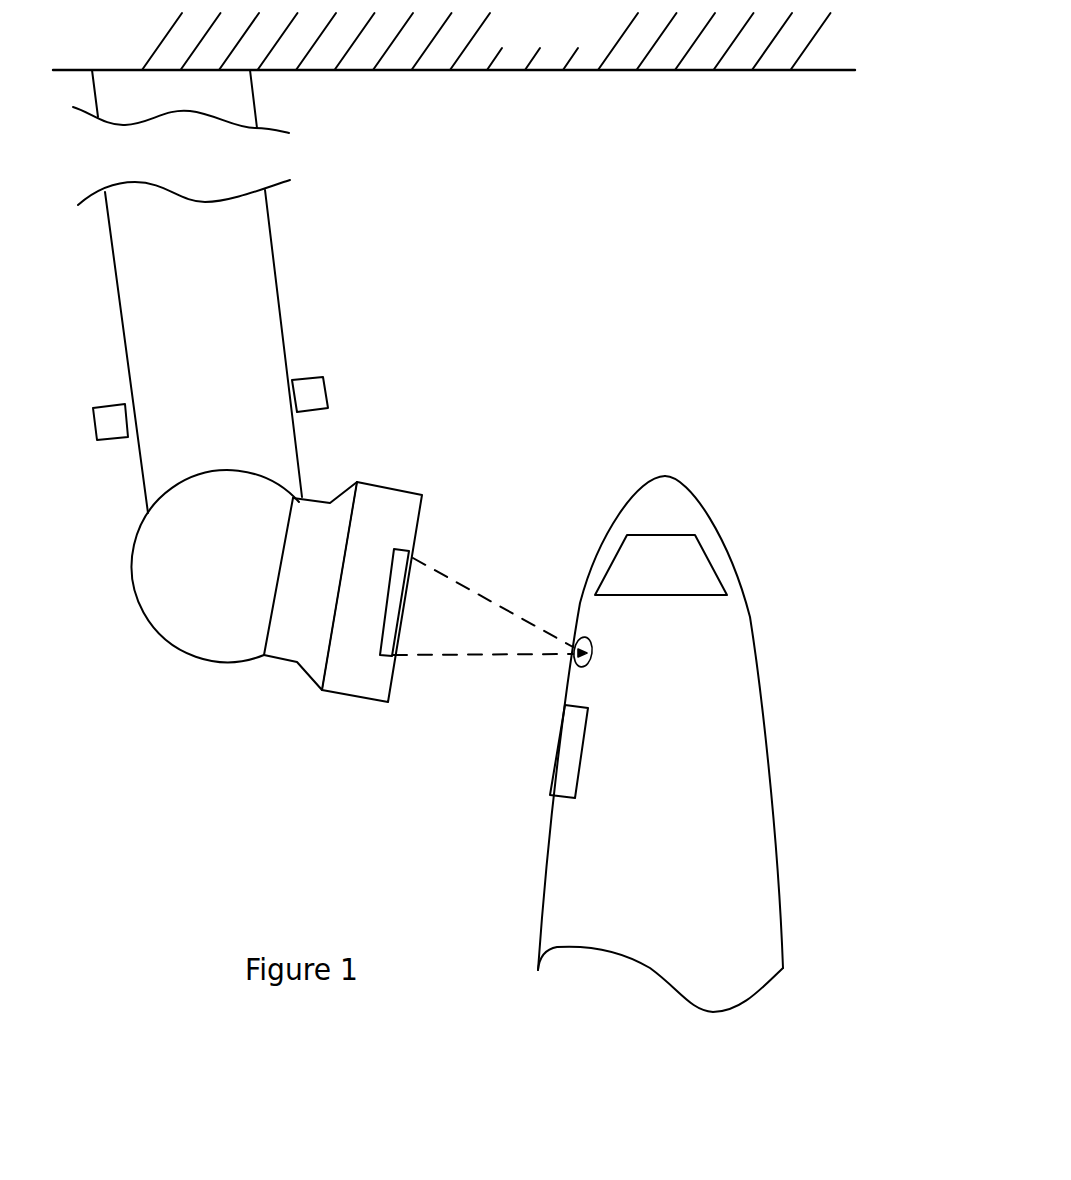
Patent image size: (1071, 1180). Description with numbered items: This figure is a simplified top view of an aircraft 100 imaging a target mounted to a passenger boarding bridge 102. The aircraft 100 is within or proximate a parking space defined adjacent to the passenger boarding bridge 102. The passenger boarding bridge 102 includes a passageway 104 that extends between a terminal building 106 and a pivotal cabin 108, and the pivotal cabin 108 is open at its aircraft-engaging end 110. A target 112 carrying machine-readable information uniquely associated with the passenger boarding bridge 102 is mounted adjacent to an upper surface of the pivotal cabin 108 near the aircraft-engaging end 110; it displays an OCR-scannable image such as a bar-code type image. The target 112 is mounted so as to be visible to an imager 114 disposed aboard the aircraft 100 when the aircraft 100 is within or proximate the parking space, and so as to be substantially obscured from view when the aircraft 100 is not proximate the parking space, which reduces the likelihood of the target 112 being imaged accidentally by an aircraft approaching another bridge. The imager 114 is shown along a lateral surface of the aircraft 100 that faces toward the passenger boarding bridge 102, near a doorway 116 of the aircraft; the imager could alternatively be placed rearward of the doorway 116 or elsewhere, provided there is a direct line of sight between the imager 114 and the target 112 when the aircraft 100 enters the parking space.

The aircraft 100 is at (735, 700).
The passenger boarding bridge 102 is at (323, 444).
The passageway 104 is at (260, 280).
The terminal building 106 is at (454, 39).
The pivotal cabin 108 is at (300, 647).
The aircraft-engaging end 110 is at (423, 508).
The target 112 is at (383, 643).
The imager 114 is at (576, 678).
The doorway 116 is at (552, 775).